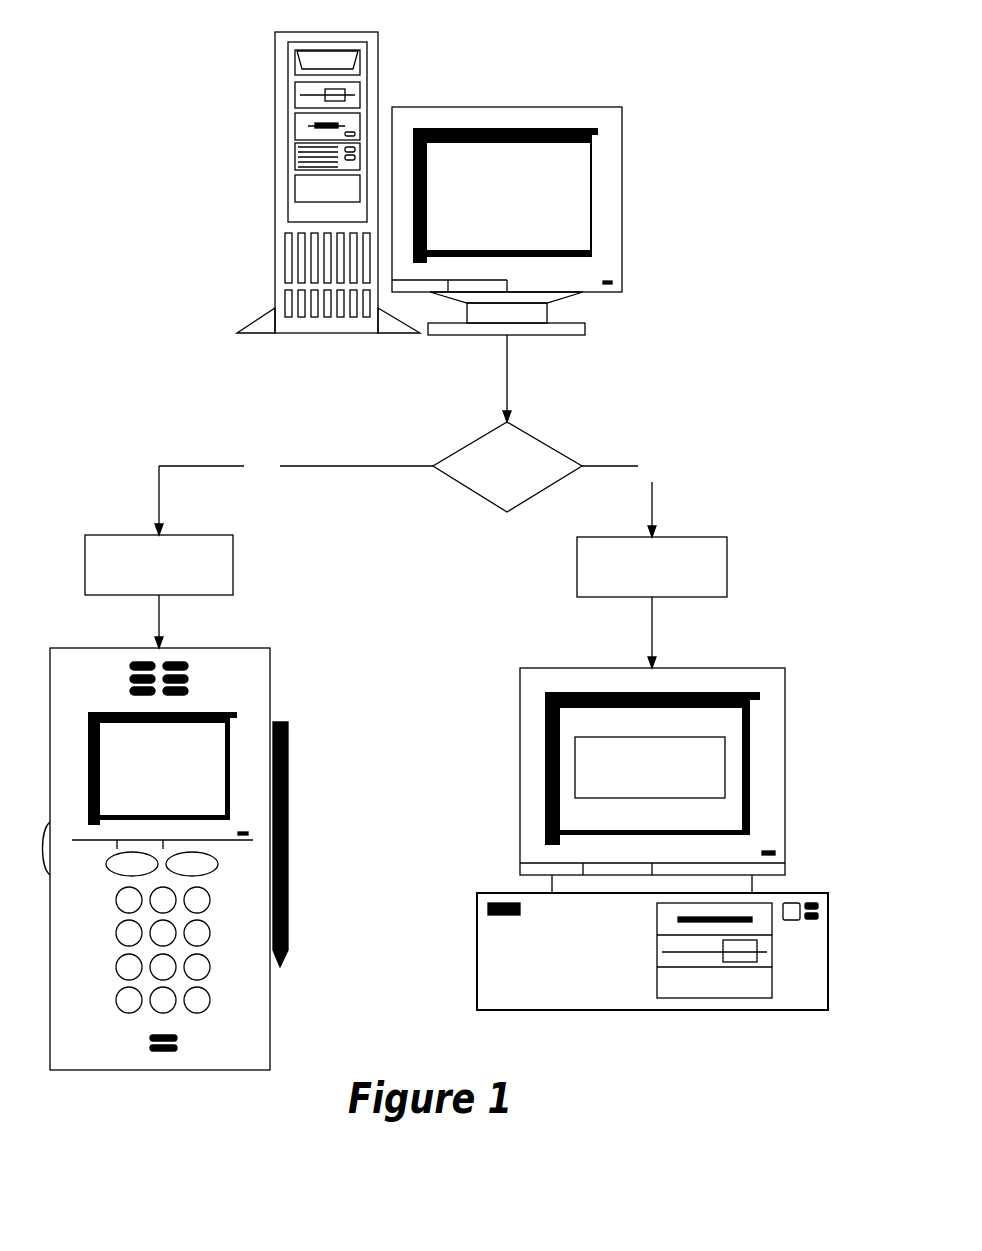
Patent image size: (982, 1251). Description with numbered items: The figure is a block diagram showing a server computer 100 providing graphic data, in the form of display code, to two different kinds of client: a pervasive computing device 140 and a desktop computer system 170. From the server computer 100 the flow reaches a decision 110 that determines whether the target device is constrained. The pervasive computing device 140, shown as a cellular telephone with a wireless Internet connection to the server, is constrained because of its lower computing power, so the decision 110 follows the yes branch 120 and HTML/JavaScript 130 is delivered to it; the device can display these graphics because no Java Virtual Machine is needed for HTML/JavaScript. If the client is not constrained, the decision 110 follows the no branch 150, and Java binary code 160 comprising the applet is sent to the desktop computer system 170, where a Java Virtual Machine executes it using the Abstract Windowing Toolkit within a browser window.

The server computer 100 is at (508, 70).
The decision 110 is at (526, 457).
The yes branch 120 is at (294, 477).
The HTML/JavaScript 130 is at (202, 557).
The pervasive computing device 140 is at (218, 844).
The no branch 150 is at (648, 478).
The Java binary code 160 is at (694, 560).
The desktop computer system 170 is at (685, 804).